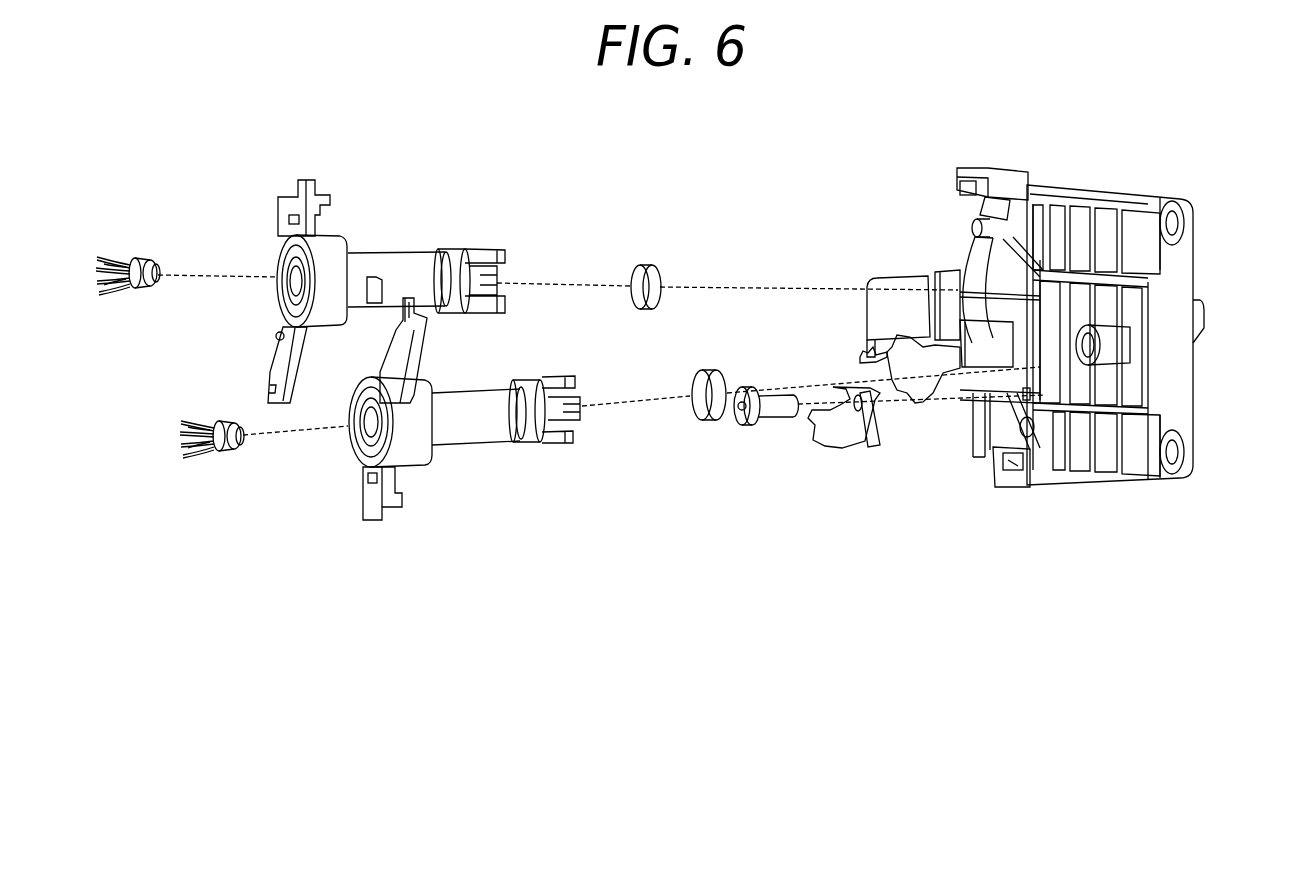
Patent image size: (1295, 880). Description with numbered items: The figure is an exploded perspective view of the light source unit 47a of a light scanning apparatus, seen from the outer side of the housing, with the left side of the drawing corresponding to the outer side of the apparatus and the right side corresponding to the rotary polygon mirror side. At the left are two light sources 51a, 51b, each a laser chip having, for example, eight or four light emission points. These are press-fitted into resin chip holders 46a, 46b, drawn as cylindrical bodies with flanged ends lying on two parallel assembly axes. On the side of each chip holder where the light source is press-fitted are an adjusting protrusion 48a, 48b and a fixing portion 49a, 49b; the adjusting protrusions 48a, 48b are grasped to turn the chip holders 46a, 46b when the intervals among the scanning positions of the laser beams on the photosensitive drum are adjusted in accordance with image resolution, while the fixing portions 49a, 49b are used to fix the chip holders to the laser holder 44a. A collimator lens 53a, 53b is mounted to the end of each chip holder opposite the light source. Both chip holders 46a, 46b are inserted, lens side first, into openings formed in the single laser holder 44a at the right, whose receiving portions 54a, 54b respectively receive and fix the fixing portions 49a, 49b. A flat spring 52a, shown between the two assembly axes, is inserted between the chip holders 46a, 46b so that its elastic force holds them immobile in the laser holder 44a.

The laser holder 44a is at (1177, 390).
The chip holder 46a is at (470, 428).
The chip holder 46b is at (404, 270).
The light source unit 47a is at (1153, 128).
The adjusting protrusion 48a is at (415, 356).
The adjusting protrusion 48b is at (275, 360).
The fixing portion 49a is at (372, 497).
The fixing portion 49b is at (309, 180).
The light source 51a is at (229, 454).
The light source 51b is at (141, 257).
The flat spring 52a is at (843, 437).
The collimator lens 53a is at (700, 410).
The collimator lens 53b is at (640, 274).
The receiving portion 54a is at (1030, 472).
The receiving portion 54b is at (966, 168).